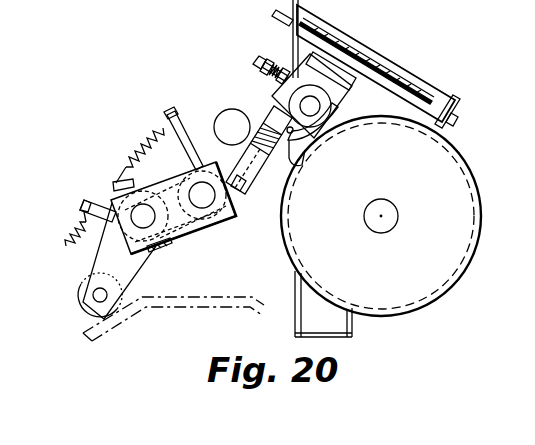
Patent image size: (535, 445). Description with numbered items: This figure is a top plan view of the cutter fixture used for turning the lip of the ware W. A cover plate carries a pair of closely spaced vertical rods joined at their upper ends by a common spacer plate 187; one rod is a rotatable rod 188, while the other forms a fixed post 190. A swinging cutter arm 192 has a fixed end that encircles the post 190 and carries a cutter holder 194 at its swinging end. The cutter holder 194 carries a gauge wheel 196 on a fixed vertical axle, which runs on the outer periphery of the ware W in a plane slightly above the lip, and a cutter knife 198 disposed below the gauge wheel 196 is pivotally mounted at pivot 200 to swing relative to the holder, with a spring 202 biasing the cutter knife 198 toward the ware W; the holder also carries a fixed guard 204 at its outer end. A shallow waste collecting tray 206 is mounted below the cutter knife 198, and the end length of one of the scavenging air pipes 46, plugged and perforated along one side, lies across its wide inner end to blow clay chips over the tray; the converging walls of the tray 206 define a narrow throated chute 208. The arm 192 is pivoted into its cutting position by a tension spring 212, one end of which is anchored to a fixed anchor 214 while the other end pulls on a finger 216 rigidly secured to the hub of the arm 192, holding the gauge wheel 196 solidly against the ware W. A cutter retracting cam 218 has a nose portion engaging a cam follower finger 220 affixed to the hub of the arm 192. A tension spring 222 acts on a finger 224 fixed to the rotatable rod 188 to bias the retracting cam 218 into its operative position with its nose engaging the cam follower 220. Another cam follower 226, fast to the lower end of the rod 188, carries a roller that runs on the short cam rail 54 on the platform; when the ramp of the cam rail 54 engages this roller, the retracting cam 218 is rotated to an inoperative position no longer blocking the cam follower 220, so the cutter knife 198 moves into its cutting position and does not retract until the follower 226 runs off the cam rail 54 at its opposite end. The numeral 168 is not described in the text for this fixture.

The scavenging air pipe 46 is at (274, 16).
The cam rail 54 is at (254, 294).
The pivot shaft 168 is at (222, 114).
The spacer plate 187 is at (209, 163).
The rotatable rod 188 is at (143, 216).
The fixed post 190 is at (228, 216).
The swinging cutter arm 192 is at (237, 190).
The cutter holder 194 is at (262, 126).
The gauge wheel 196 is at (321, 121).
The cutter knife 198 is at (333, 106).
The pivot 200 is at (303, 159).
The spring 202 is at (288, 62).
The fixed guard 204 is at (347, 68).
The waste collecting tray 206 is at (352, 41).
The chute 208 is at (296, 324).
The tension spring 212 is at (149, 140).
The fixed anchor 214 is at (176, 108).
The finger 216 is at (118, 181).
The cutter retracting cam 218 is at (137, 280).
The cam follower finger 220 is at (170, 246).
The tension spring 222 is at (72, 230).
The finger 224 is at (101, 201).
The cam follower 226 is at (93, 268).
The ware W is at (483, 225).